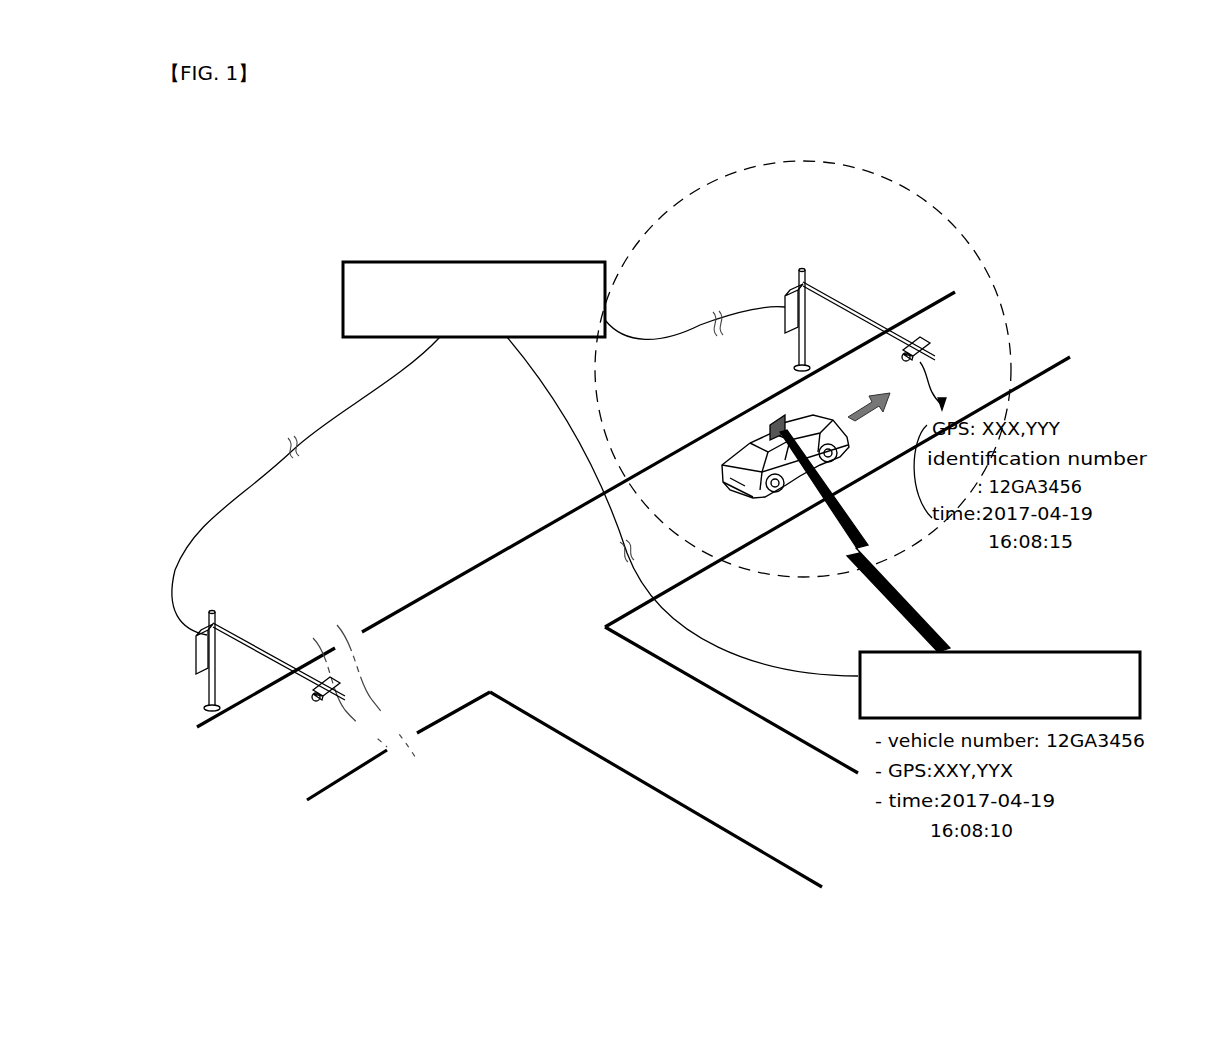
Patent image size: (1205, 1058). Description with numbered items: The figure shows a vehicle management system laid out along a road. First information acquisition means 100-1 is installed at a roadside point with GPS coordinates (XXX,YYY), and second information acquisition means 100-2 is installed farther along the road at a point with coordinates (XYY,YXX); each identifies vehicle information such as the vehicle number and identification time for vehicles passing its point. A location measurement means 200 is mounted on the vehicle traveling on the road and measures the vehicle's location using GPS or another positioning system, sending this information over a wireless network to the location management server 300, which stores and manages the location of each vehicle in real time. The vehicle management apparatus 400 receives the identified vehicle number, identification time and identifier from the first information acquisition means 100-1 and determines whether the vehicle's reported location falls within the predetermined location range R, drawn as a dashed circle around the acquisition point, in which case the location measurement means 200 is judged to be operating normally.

The first information acquisition means 100-1 is at (787, 292).
The second information acquisition means 100-2 is at (195, 663).
The location measurement means 200 is at (777, 418).
The location management server 300 is at (1043, 652).
The vehicle management apparatus 400 is at (555, 262).
The predetermined location range R is at (918, 195).